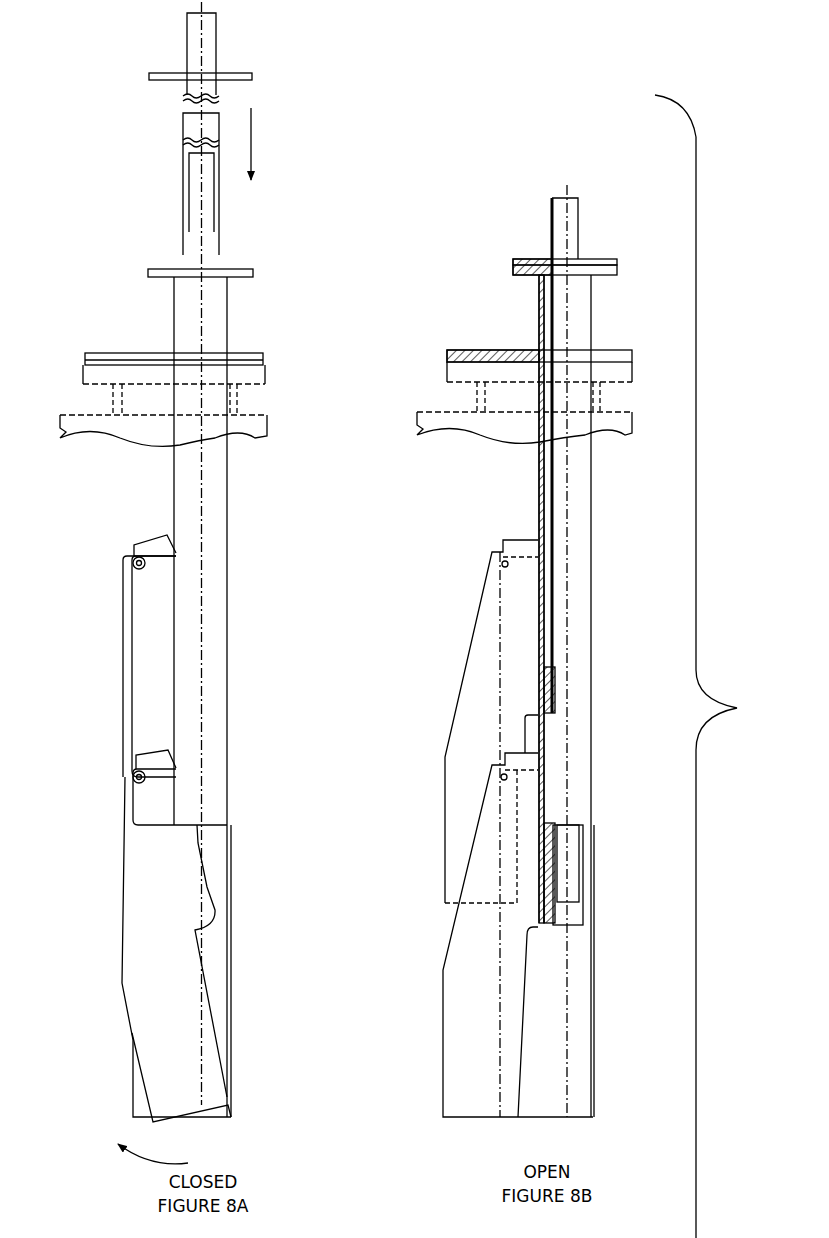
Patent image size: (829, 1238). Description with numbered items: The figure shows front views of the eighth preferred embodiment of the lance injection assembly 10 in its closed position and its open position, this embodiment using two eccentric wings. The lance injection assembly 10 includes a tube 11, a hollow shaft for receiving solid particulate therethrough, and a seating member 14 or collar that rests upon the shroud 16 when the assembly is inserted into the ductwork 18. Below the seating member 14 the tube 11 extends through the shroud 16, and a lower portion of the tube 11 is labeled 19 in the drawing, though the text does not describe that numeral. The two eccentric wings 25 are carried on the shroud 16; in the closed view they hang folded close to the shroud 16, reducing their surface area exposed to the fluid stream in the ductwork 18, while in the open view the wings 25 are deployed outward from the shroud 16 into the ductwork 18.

In FIG. 8B, the lance injection assembly 10 is at (713, 666).
In FIG. 8A, the tube 11 is at (187, 45).
In FIG. 8A, the seating member 14 is at (253, 74).
In FIG. 8A, the shroud 16 is at (228, 312).
In FIG. 8B, the shroud 16 is at (537, 511).
In FIG. 8A, the ductwork 18 is at (266, 372).
In FIG. 8A, the slotted rod section 19 is at (217, 221).
In FIG. 8A, the gripping jaw 25 is at (121, 634).
In FIG. 8B, the gripping jaw 25 is at (469, 634).